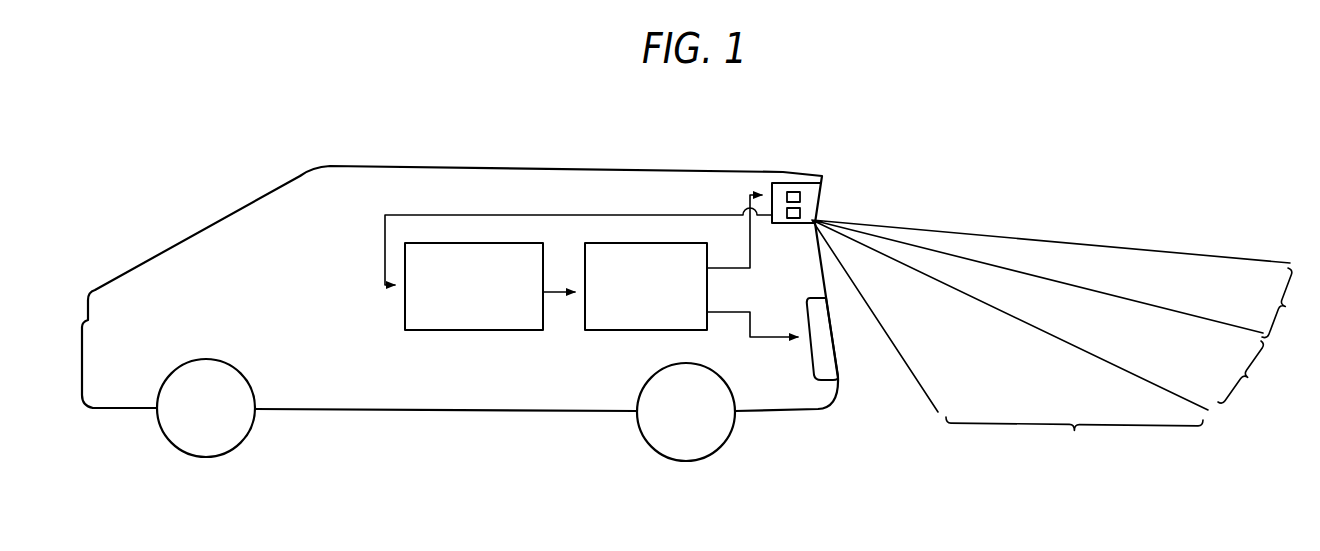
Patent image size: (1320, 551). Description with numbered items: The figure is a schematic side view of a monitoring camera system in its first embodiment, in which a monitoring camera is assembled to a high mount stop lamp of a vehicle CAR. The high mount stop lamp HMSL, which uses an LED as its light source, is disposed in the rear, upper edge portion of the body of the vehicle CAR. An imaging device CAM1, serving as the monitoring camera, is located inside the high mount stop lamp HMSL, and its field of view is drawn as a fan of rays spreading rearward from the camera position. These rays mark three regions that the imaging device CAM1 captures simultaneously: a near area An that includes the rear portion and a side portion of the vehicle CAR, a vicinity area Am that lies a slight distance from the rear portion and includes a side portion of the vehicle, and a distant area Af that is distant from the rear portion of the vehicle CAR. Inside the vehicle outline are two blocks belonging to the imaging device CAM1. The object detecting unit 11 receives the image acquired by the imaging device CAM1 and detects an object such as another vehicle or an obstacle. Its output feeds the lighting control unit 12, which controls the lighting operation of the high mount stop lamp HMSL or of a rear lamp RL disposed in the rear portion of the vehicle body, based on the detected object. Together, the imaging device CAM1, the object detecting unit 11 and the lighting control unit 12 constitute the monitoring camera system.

The vehicle CAR is at (225, 225).
The high mount stop lamp HMSL is at (785, 182).
The LED (light emitting diode) LED is at (806, 192).
The imaging device CAM1 is at (806, 208).
The rear lamp RL is at (837, 350).
The object detecting unit 11 is at (472, 330).
The lighting control unit 12 is at (655, 332).
The distant area Af is at (1289, 303).
The vicinity area Am is at (1255, 372).
The near area An is at (1074, 442).